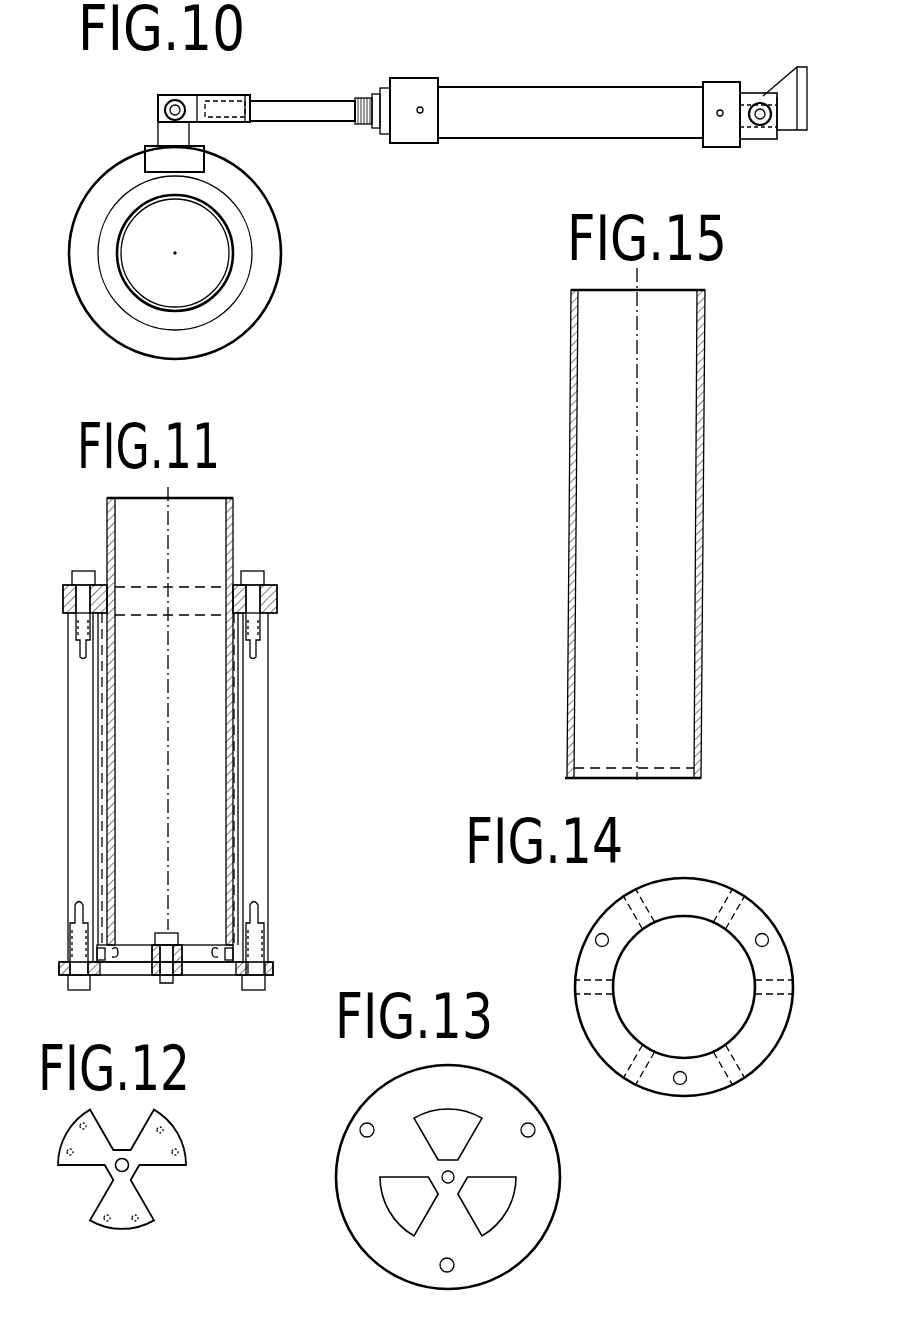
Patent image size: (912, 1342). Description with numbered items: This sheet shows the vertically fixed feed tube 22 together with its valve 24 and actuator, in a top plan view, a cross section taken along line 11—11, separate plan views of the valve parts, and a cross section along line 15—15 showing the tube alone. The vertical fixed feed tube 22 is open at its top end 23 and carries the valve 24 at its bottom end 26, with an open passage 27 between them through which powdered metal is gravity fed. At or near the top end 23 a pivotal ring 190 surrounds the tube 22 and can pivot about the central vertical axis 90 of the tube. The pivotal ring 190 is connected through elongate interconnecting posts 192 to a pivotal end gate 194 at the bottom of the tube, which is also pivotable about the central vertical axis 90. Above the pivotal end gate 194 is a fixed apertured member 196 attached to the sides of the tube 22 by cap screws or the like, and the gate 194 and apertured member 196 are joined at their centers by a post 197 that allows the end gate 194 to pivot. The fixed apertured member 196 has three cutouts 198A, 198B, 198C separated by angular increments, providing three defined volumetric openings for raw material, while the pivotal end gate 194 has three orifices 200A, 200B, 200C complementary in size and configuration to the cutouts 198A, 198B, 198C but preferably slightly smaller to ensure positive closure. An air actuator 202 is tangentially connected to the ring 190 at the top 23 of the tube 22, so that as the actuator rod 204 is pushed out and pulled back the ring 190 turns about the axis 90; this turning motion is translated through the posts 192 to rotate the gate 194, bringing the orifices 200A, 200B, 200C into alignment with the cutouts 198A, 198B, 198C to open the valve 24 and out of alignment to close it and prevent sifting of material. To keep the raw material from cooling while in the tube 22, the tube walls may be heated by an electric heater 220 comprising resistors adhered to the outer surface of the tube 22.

In FIG. 10, the section line 11— 11 is at (92, 252).
In FIG. 10, the section line 15— 15 is at (112, 224).
In FIG. 11, the vertical fixed feed tube 22 is at (242, 541).
In FIG. 15, the vertical fixed feed tube 22 is at (700, 738).
In FIG. 11, the top end 23 is at (233, 498).
In FIG. 15, the top end 23 is at (703, 288).
In FIG. 11, the valve 24 is at (62, 964).
In FIG. 11, the bottom end 26 is at (227, 968).
In FIG. 15, the bottom end 26 is at (698, 780).
In FIG. 11, the open passage 27 is at (185, 857).
In FIG. 15, the open passage 27 is at (598, 747).
In FIG. 11, the central vertical axis 90 is at (168, 503).
In FIG. 15, the central vertical axis 90 is at (637, 467).
In FIG. 10, the pivotal ring 190 is at (257, 220).
In FIG. 11, the pivotal ring 190 is at (65, 600).
In FIG. 14, the pivotal ring 190 is at (683, 890).
In FIG. 11, the elongate interconnecting posts 192 is at (78, 750).
In FIG. 11, the pivotal end gate 194 is at (273, 968).
In FIG. 13, the pivotal end gate 194 is at (530, 1177).
In FIG. 11, the fixed apertured member 196 is at (140, 948).
In FIG. 12, the fixed apertured member 196 is at (170, 1138).
In FIG. 11, the post 197 is at (167, 980).
In FIG. 12, the cutout 198A is at (163, 1170).
In FIG. 12, the cutout 198B is at (107, 1124).
In FIG. 12, the cutout 198C is at (83, 1170).
In FIG. 13, the orifice 200A is at (488, 1200).
In FIG. 13, the orifice 200B is at (413, 1193).
In FIG. 13, the orifice 200C is at (450, 1127).
In FIG. 10, the air actuator 202 is at (479, 136).
In FIG. 10, the actuator rod 204 is at (283, 108).
In FIG. 11, the electric heater 220 is at (237, 690).